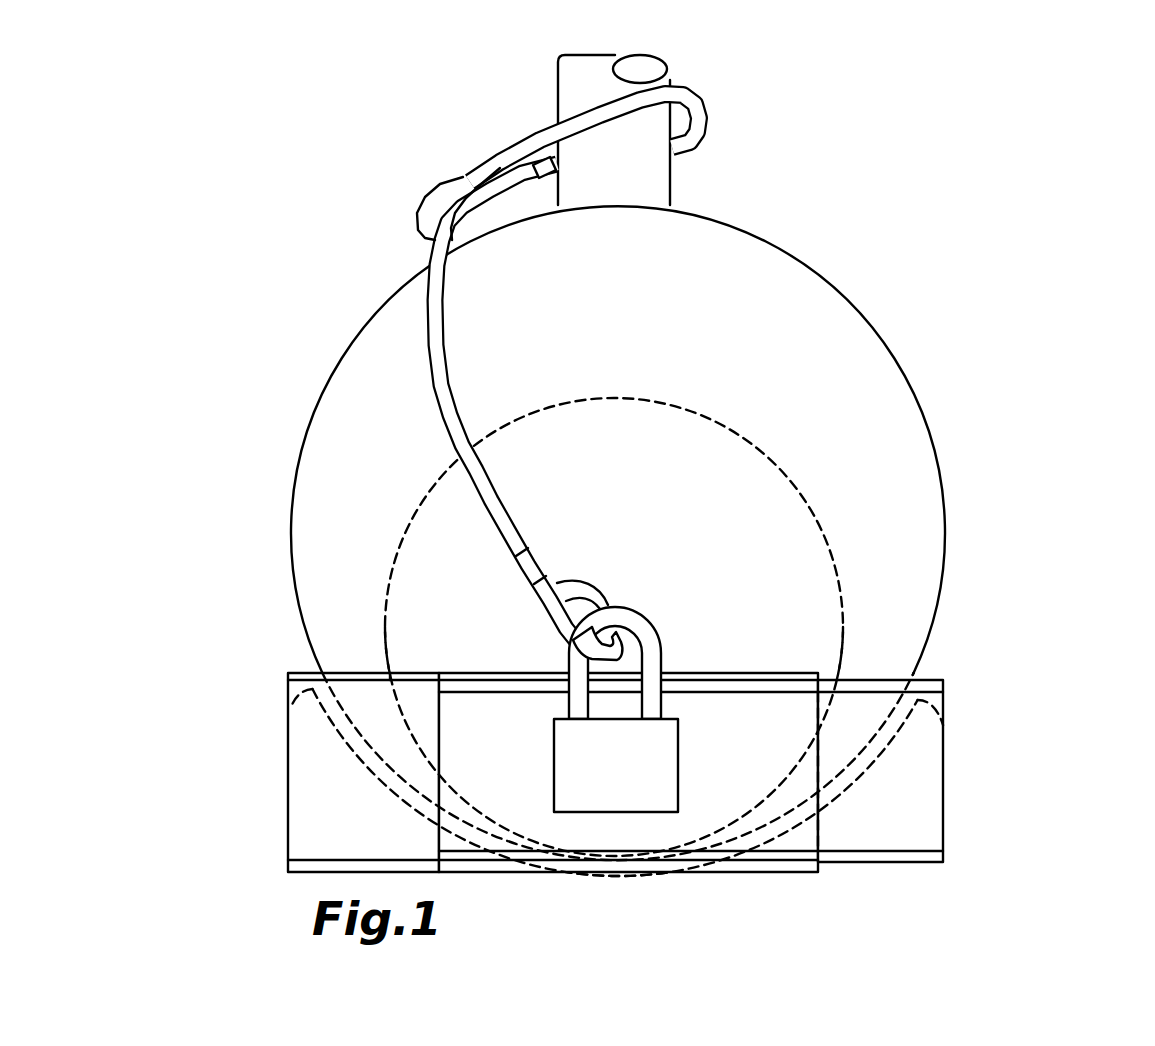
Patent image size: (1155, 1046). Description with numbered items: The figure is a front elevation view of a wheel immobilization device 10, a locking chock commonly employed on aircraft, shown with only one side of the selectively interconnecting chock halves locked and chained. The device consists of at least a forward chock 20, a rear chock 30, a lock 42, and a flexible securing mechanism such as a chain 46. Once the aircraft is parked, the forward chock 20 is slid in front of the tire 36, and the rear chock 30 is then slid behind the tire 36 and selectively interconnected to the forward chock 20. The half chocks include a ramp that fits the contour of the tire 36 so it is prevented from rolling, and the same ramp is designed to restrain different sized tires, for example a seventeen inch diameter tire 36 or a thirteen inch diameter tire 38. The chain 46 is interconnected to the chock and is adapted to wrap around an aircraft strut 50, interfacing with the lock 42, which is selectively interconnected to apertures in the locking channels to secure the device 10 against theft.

The wheel immobilization device 10 is at (1000, 745).
The forward chock 20 is at (621, 751).
The rear chock 30 is at (287, 773).
The tire 36 is at (945, 503).
The tire 38 is at (847, 632).
The lock 42 is at (678, 776).
The chain 46 is at (457, 181).
The aircraft strut 50 is at (672, 178).